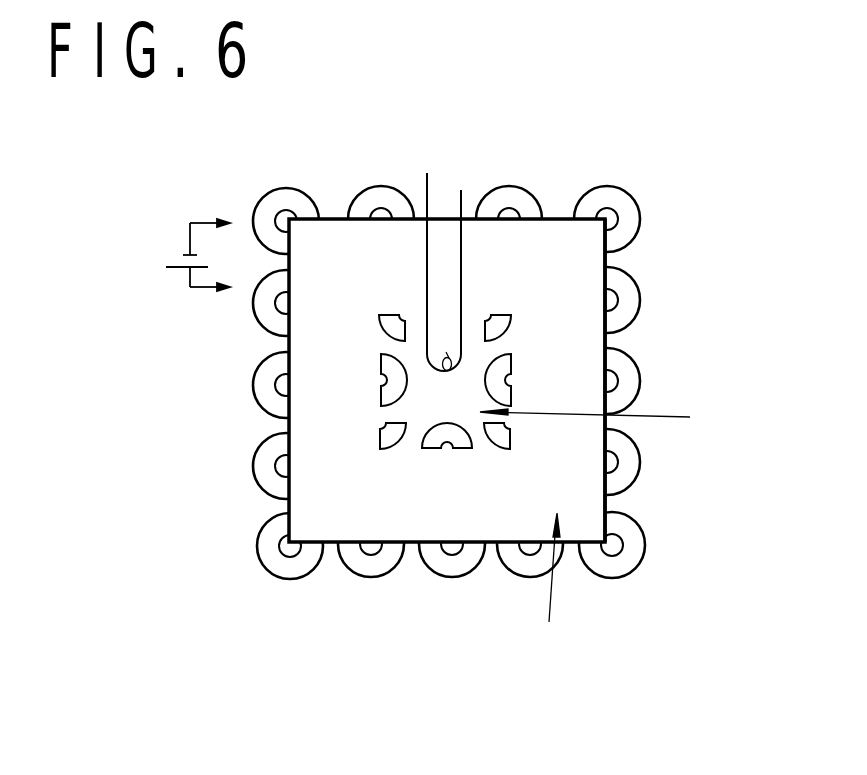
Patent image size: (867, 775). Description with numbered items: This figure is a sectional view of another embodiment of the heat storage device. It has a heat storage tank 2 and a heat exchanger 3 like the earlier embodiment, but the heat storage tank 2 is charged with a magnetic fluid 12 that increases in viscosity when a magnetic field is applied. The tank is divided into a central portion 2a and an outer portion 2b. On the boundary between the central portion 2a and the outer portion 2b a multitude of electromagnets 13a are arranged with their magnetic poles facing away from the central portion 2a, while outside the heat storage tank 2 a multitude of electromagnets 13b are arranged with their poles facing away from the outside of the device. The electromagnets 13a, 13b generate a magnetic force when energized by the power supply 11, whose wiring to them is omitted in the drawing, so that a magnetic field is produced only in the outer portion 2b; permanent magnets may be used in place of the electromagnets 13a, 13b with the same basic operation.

The heat storage tank 2 is at (605, 341).
The central portion 2a is at (606, 421).
The outer portion 2b is at (547, 587).
The heat exchanger 3 is at (461, 190).
The power supply 11 is at (179, 267).
The magnetic fluid 12 is at (337, 235).
The electromagnet 13a is at (380, 399).
The electromagnet 13b is at (637, 287).